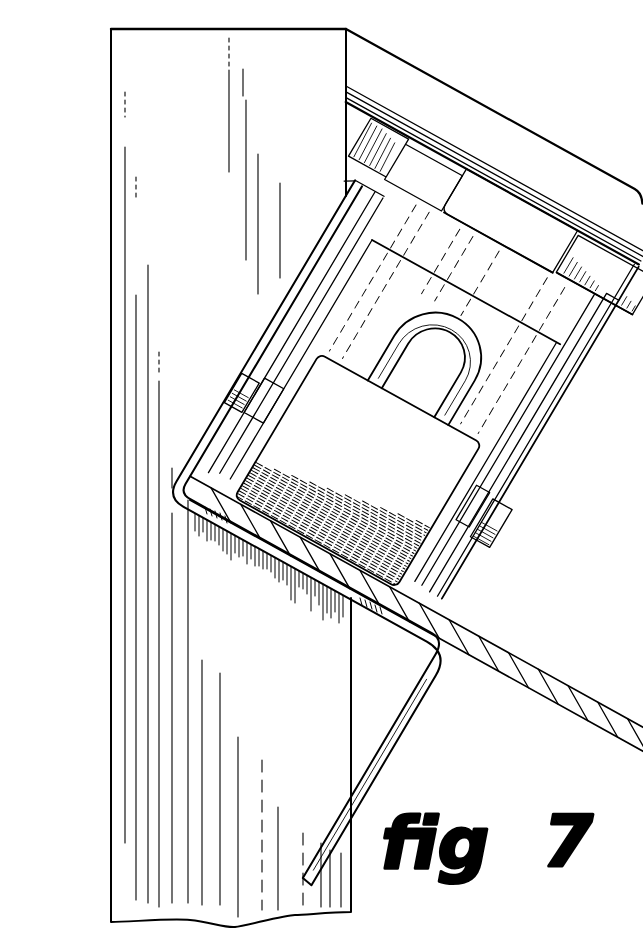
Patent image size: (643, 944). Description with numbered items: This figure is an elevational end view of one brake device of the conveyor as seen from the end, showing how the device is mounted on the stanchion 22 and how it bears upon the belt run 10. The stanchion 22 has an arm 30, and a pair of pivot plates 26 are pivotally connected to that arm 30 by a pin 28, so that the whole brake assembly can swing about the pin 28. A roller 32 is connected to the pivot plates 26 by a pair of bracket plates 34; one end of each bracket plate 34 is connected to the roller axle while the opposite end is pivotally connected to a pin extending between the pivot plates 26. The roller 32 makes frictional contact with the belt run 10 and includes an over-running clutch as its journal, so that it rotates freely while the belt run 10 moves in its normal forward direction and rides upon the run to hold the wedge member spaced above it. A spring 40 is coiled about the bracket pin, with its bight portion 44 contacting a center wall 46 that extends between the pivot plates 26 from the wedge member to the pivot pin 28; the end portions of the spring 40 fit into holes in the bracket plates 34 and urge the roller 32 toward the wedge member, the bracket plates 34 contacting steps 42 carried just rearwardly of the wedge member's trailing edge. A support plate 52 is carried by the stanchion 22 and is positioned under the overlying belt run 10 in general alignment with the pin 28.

The belt run 10 is at (573, 697).
The stanchion 22 is at (112, 404).
The pivot plates 26 is at (297, 323).
The pin 28 is at (483, 197).
The arm 30 is at (580, 172).
The roller 32 is at (352, 451).
The bracket plates 34 is at (260, 432).
The spring 40 is at (390, 370).
The steps 42 is at (212, 518).
The bight portion 44 is at (463, 322).
The center wall 46 is at (543, 354).
The support plate 52 is at (325, 582).